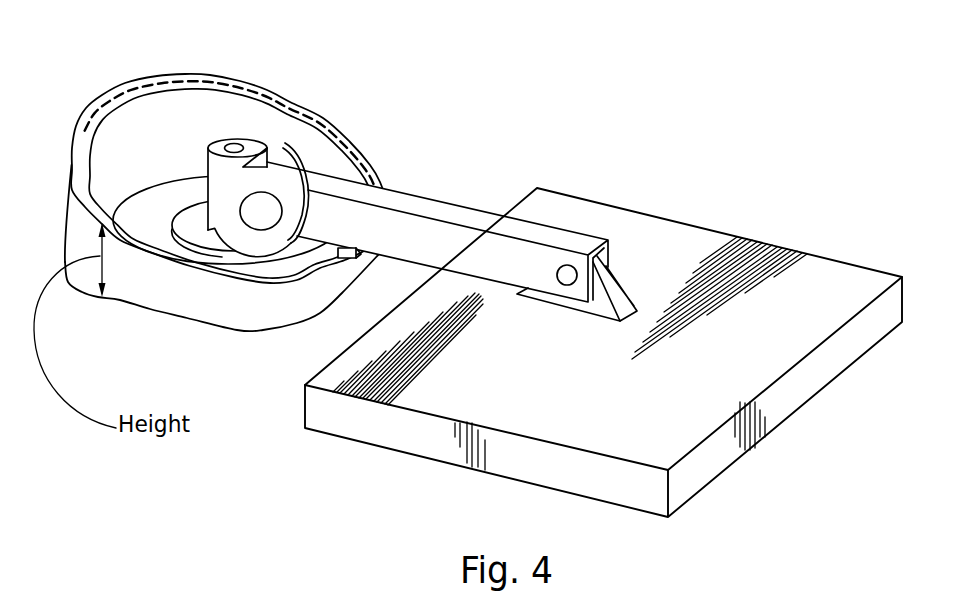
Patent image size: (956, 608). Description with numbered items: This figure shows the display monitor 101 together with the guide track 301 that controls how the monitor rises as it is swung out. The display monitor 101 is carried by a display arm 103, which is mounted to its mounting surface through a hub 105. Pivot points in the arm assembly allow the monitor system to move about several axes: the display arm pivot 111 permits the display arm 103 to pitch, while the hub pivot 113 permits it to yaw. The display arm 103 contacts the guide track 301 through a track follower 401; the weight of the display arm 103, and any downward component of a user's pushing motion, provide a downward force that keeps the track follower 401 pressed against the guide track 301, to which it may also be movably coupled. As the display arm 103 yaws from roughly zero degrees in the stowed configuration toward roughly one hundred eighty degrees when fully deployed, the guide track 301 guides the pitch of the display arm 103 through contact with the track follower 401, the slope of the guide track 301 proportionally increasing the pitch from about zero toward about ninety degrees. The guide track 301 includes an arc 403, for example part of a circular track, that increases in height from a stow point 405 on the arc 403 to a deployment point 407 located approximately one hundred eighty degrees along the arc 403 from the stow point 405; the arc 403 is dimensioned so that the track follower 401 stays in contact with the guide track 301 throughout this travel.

The display monitor 101 is at (672, 240).
The display arm 103 is at (440, 200).
The hub 105 is at (288, 143).
The display arm pivot 111 is at (260, 212).
The hub pivot 113 is at (232, 146).
The guide track 301 is at (238, 85).
The track follower 401 is at (325, 262).
The arc 403 is at (263, 97).
The stow point 405 is at (353, 258).
The deployment point 407 is at (103, 92).